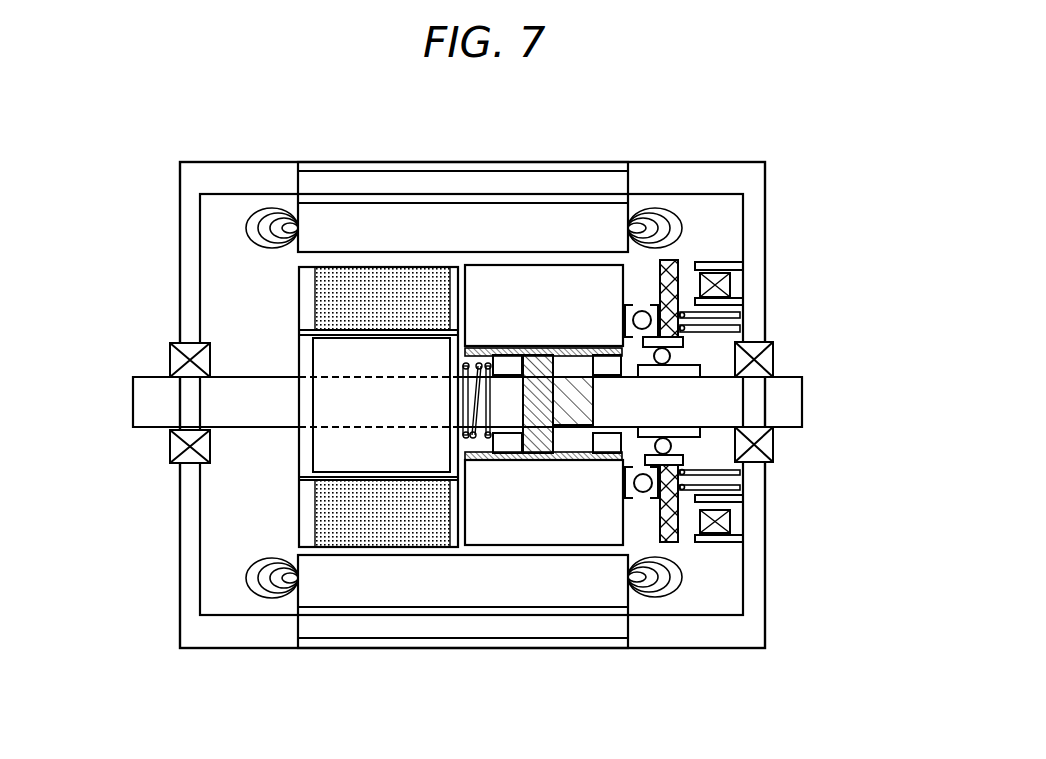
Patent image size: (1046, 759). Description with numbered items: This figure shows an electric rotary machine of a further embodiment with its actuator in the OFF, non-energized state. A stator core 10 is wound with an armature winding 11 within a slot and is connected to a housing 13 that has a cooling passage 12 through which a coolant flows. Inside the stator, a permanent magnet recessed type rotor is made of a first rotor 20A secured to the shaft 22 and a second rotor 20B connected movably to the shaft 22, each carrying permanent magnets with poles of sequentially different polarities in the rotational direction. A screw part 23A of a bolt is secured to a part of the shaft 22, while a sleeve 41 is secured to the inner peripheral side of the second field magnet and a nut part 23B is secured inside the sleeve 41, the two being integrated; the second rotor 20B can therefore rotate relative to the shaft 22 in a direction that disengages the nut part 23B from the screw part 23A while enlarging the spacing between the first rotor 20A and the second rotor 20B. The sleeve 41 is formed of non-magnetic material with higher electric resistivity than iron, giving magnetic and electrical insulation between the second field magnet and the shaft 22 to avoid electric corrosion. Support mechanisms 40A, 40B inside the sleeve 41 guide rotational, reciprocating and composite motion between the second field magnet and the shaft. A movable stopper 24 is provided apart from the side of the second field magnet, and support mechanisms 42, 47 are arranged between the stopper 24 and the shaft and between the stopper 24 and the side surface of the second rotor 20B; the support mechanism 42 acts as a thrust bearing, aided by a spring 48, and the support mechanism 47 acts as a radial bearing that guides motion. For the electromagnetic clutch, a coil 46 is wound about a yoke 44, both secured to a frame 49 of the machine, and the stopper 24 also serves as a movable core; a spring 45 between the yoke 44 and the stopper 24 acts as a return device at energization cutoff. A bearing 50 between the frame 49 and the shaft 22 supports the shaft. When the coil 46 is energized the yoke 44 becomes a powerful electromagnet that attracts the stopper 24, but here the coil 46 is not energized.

The stator core 10 is at (313, 212).
The armature winding 11 is at (256, 212).
The cooling passage 12 is at (370, 187).
The housing 13 is at (424, 163).
The first rotor 20A is at (297, 290).
The second rotor 20B is at (480, 265).
The shaft 22 is at (150, 430).
The screw part of a bolt 23A is at (577, 378).
The nut part 23B is at (538, 368).
The movable stopper 24 is at (680, 262).
The support mechanism 40A is at (515, 453).
The support mechanism 40B is at (605, 453).
The sleeve 41 is at (510, 347).
The support mechanism 42 is at (647, 498).
The yoke 44 is at (725, 260).
The spring 45 is at (743, 323).
The coil 46 is at (733, 285).
The support mechanism 47 is at (673, 443).
The spring 48 is at (484, 438).
The frame 49 is at (180, 210).
The bearing 50 is at (180, 465).